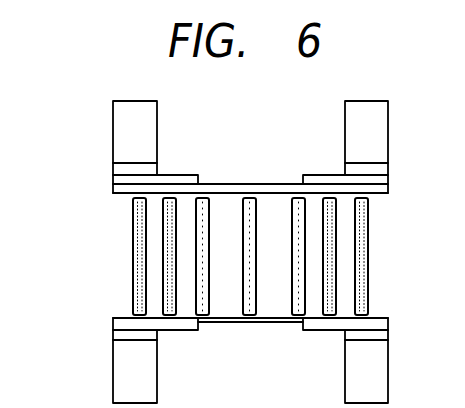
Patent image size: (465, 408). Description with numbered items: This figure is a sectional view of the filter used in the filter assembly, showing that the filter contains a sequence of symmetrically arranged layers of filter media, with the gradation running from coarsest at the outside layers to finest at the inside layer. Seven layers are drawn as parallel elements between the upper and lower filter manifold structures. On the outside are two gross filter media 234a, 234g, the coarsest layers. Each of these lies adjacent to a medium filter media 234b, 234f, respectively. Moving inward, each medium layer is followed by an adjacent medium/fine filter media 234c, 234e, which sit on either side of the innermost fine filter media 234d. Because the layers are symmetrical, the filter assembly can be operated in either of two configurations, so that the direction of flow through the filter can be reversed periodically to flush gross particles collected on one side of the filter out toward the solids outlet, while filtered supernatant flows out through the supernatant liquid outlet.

The gross filter media 234a is at (99, 256).
The medium filter media 234b is at (114, 256).
The medium/fine filter media 234c is at (189, 224).
The fine filter media 234d is at (258, 214).
The medium/fine filter media 234e is at (314, 222).
The medium filter media 234f is at (378, 256).
The gross filter media 234g is at (399, 255).